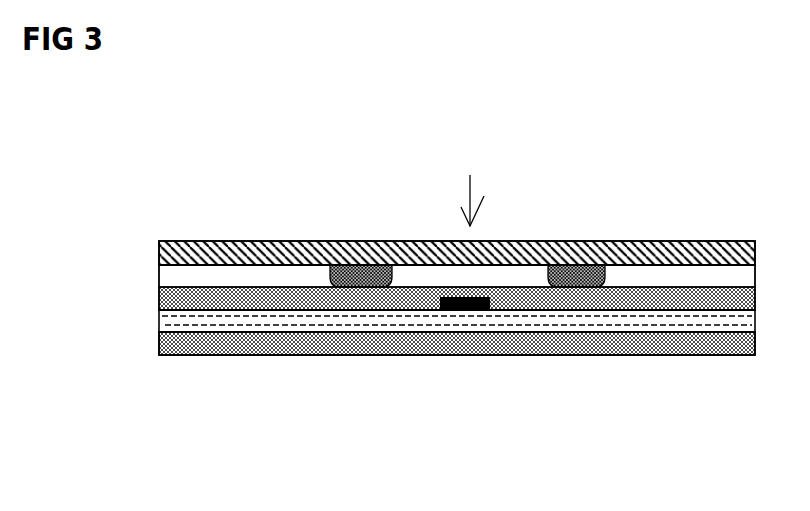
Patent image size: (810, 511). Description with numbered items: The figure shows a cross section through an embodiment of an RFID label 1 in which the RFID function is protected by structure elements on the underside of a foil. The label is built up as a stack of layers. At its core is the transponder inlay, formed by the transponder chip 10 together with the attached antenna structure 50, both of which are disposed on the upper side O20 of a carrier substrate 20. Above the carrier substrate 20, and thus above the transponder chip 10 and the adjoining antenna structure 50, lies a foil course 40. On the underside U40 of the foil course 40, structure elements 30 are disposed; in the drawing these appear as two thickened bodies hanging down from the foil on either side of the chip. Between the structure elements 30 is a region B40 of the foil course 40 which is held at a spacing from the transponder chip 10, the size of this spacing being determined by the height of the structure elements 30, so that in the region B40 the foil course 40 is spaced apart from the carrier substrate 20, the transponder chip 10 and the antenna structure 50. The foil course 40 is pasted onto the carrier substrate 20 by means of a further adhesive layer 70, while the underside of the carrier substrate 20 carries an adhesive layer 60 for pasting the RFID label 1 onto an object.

The RFID label 1 is at (612, 172).
The transponder chip 10 is at (463, 306).
The carrier substrate 20 is at (565, 322).
The upper side of carrier substrate O20 is at (527, 310).
The structure elements 30 is at (361, 265).
The foil course 40 is at (273, 240).
The underside of foil course U40 is at (232, 240).
The region of foil course B40 is at (510, 242).
The antenna structure 50 is at (410, 310).
The adhesive layer 60 is at (653, 355).
The further adhesive layer 70 is at (298, 297).